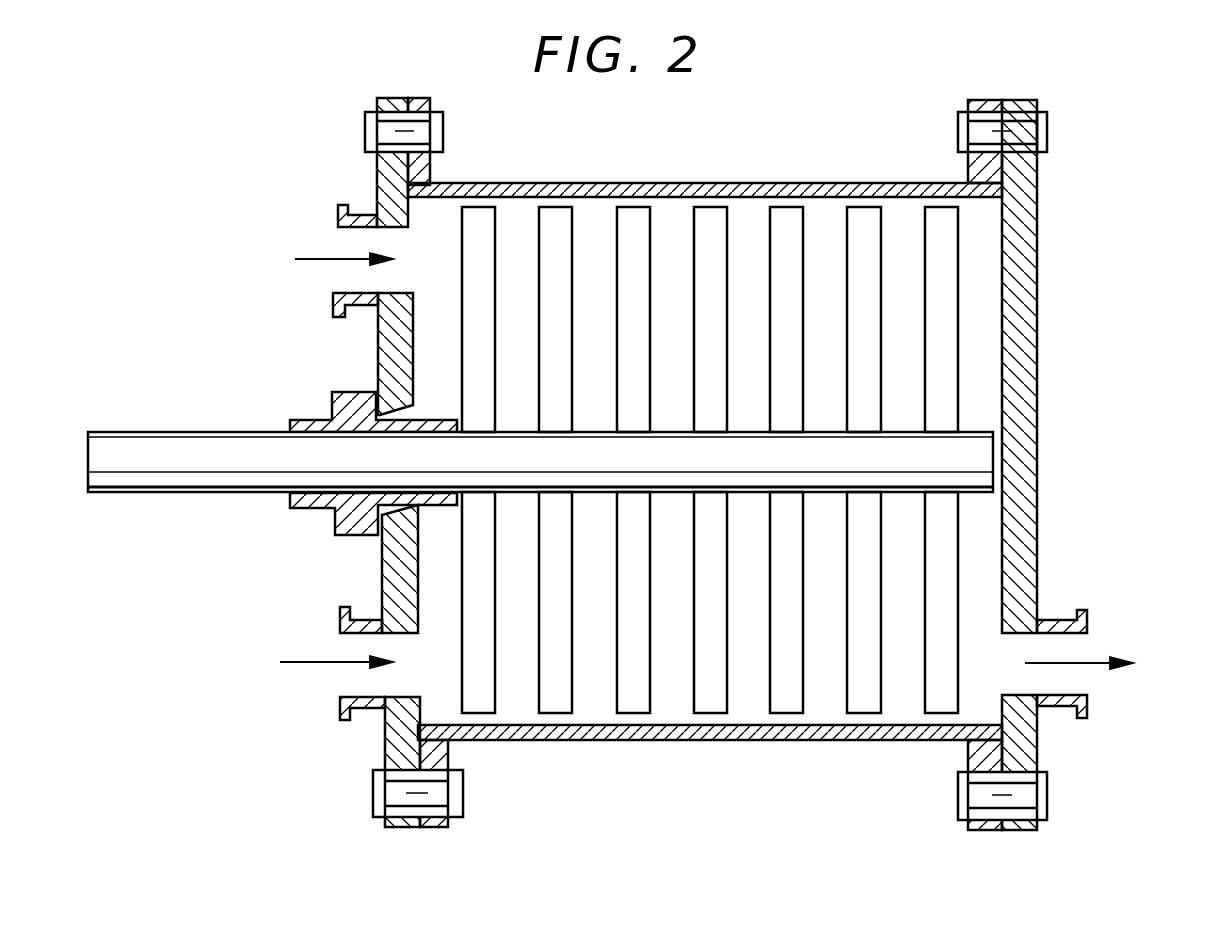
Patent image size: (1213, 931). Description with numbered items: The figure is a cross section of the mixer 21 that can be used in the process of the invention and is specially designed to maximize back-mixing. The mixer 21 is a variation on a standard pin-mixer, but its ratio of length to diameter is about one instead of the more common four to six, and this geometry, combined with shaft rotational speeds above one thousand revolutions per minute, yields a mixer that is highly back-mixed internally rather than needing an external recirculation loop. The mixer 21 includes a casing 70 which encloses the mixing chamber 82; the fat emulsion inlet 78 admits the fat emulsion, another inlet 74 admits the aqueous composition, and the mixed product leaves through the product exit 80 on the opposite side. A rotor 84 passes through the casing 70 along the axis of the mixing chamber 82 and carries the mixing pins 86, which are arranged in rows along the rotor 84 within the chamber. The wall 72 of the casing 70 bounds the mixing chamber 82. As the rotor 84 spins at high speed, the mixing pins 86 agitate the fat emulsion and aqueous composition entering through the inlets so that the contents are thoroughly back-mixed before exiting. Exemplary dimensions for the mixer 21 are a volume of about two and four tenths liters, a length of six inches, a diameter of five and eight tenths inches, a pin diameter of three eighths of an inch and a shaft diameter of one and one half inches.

The mixer 21 is at (498, 830).
The casing 70 is at (1020, 576).
The housing wall 72 is at (862, 735).
The inlet flow 74 is at (278, 251).
The fat emulsion inlet 78 is at (300, 622).
The product exit 80 is at (1113, 636).
The mixing chamber 82 is at (675, 703).
The rotor 84 is at (266, 450).
The mixing pins 86 is at (862, 225).